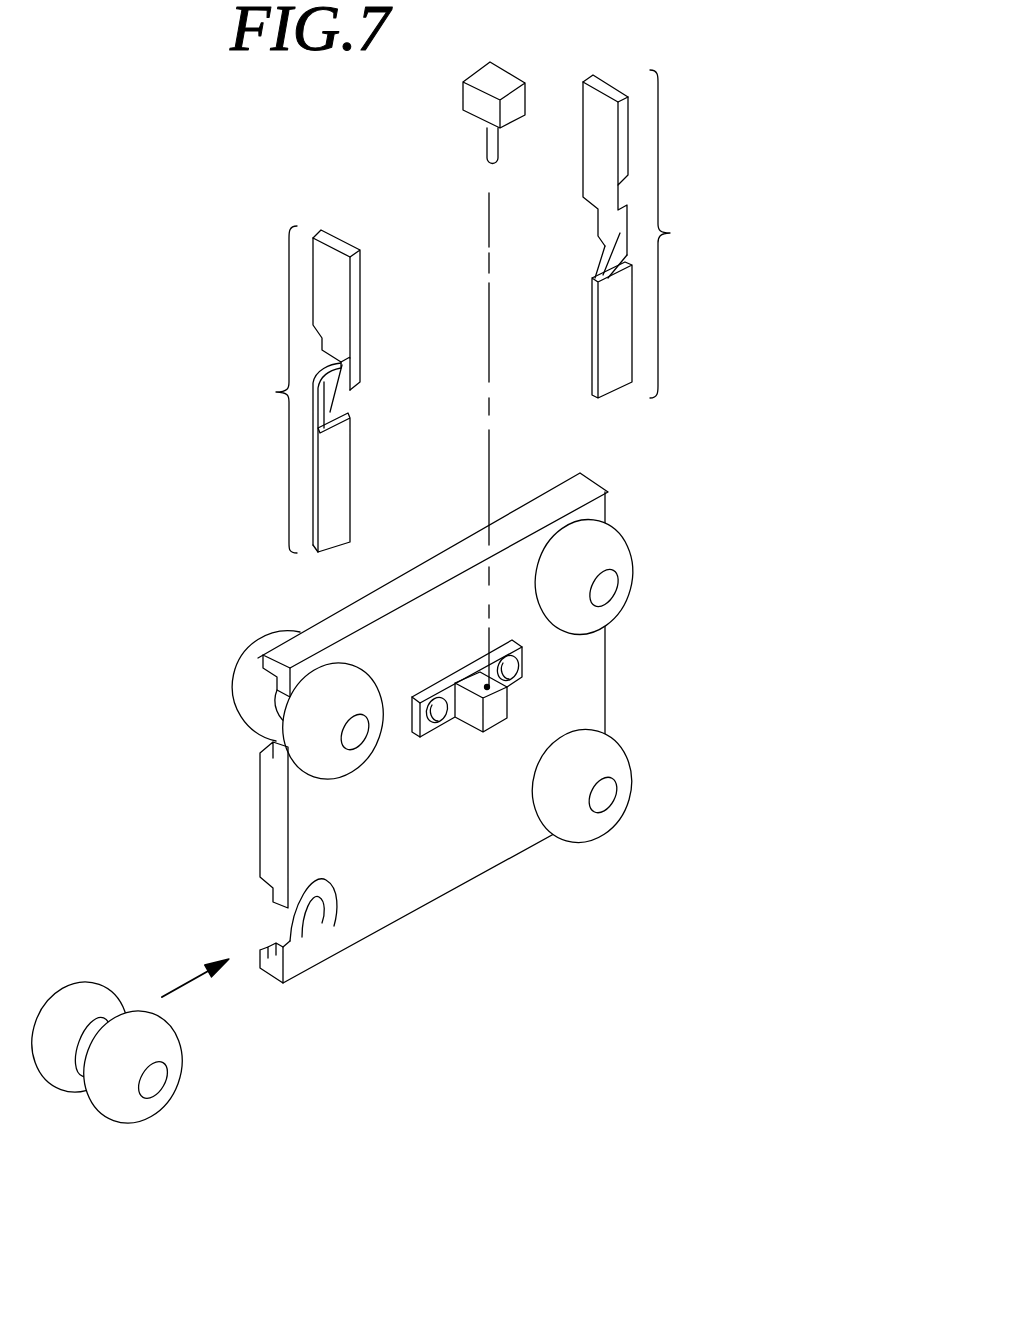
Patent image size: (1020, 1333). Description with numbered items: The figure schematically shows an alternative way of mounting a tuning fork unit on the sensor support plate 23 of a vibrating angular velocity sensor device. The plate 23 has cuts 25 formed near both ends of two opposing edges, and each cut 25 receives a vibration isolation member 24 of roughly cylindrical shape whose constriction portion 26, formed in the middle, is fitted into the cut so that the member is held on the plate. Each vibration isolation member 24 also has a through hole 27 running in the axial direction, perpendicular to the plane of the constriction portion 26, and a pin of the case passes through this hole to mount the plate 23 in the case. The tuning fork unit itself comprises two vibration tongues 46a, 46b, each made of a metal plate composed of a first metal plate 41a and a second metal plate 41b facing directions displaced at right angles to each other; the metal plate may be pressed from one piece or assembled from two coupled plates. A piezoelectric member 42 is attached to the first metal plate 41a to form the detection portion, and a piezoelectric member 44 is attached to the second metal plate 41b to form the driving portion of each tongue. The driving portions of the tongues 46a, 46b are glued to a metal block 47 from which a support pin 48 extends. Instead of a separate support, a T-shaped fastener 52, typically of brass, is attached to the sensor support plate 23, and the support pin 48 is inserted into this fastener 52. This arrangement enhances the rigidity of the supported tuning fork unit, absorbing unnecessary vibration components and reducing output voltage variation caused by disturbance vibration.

The sensor support plate 23 is at (585, 487).
The vibration isolation member 24 is at (113, 1100).
The cut 25 is at (317, 928).
The constriction portion 26 is at (100, 1030).
The through hole 27 is at (158, 1082).
The first metal plate 41a is at (330, 414).
The second metal plate 41b is at (340, 354).
The piezoelectric member 42 is at (343, 497).
The piezoelectric member 44 is at (330, 288).
The vibration tongue 46a is at (448, 276).
The vibration tongue 46b is at (693, 234).
The metal block 47 is at (477, 97).
The support pin 48 is at (493, 145).
The T-shaped fastener 52 is at (417, 740).